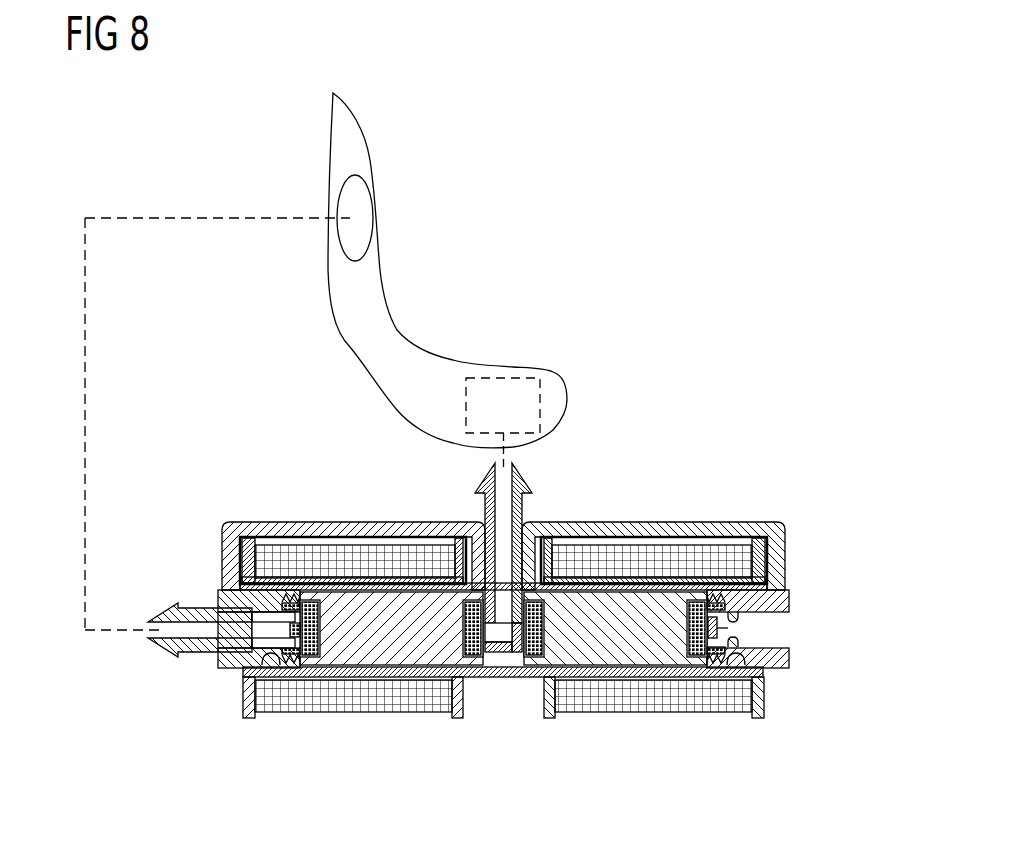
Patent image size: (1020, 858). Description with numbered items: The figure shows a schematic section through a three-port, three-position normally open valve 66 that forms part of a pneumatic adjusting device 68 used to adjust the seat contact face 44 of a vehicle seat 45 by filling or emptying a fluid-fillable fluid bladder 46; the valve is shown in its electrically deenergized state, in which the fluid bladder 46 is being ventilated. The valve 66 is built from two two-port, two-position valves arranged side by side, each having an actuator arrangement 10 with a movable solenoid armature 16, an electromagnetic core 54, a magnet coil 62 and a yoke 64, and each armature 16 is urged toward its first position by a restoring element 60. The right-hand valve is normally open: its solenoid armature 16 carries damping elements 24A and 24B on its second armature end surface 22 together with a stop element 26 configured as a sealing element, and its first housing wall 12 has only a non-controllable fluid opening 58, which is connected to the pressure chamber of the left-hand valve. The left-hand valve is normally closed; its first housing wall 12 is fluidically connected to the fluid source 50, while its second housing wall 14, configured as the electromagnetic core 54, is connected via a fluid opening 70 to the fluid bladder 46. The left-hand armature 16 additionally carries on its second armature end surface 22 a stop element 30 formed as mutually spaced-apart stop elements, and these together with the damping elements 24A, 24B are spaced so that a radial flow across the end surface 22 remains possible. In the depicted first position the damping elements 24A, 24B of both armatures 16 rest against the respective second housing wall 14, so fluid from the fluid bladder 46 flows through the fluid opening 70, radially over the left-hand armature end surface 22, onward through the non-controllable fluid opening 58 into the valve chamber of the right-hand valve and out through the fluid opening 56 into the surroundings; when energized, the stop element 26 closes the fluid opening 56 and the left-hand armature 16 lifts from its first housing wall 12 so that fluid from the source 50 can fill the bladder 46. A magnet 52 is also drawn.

The actuator arrangement 10 is at (368, 460).
The first housing wall 12 is at (500, 632).
The second housing wall 14 is at (168, 590).
The solenoid armature 16 is at (365, 640).
The second armature end surface 22 is at (285, 597).
The damping element 24A is at (290, 605).
The damping element 24B is at (268, 665).
The stop element 26 is at (728, 627).
The stop element 30 is at (262, 598).
The seat contact face 44 is at (395, 287).
The vehicle seat 45 is at (497, 133).
The fluid bladder 46 is at (357, 177).
The fluid source 50 is at (500, 378).
The permanent magnet 52 is at (462, 630).
The electromagnetic core 54 is at (210, 603).
The fluid opening 56 is at (737, 634).
The non-controllable fluid opening 58 is at (500, 660).
The restoring element 60 is at (300, 660).
The magnet coil 62 is at (335, 700).
The yoke 64 is at (418, 532).
The 3/3 NO valve 66 is at (760, 500).
The pneumatic adjusting device 68 is at (722, 283).
The fluid opening 70 is at (152, 634).